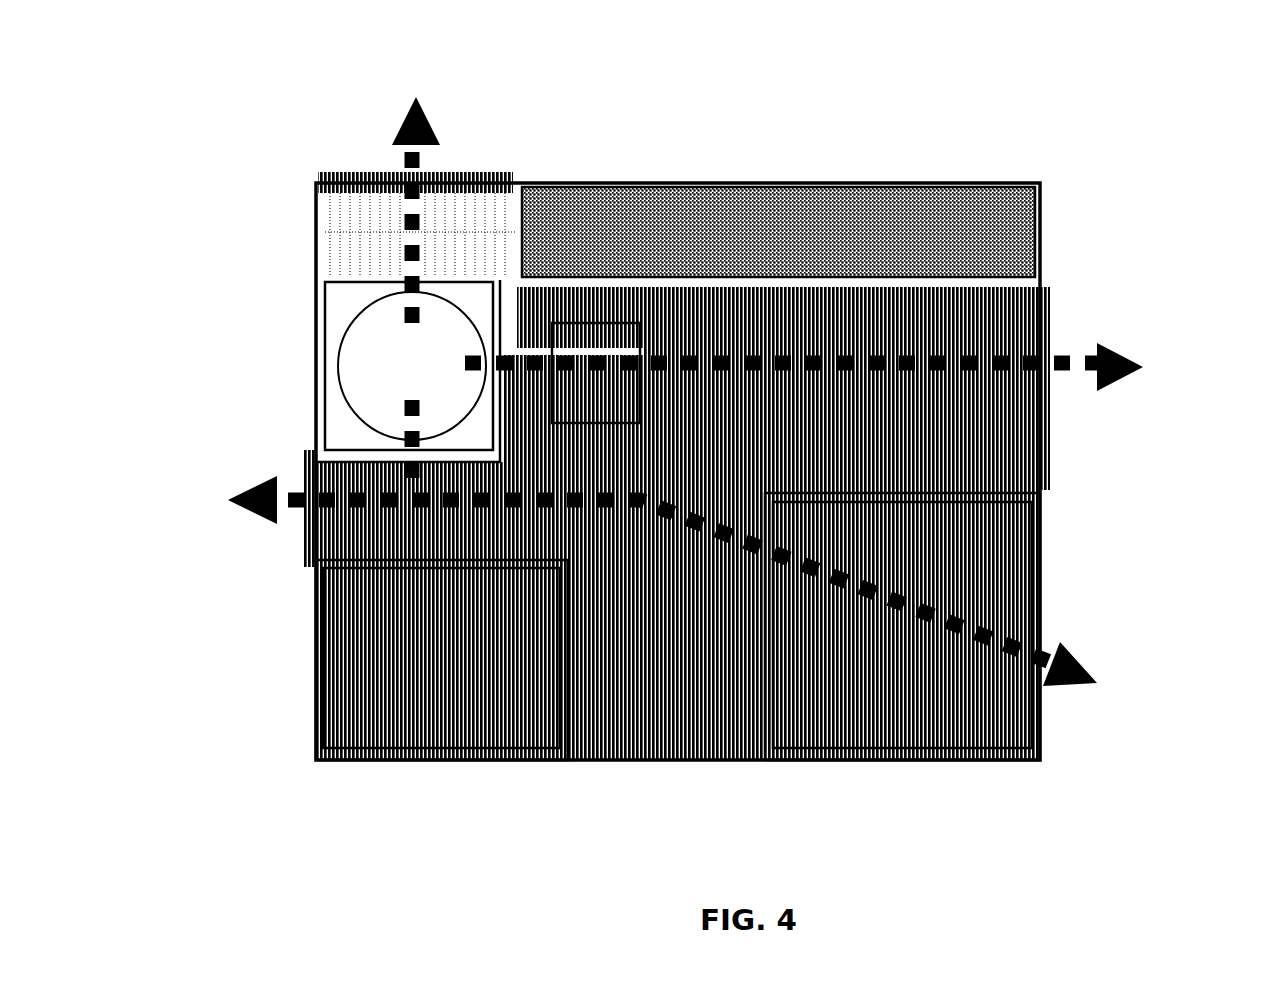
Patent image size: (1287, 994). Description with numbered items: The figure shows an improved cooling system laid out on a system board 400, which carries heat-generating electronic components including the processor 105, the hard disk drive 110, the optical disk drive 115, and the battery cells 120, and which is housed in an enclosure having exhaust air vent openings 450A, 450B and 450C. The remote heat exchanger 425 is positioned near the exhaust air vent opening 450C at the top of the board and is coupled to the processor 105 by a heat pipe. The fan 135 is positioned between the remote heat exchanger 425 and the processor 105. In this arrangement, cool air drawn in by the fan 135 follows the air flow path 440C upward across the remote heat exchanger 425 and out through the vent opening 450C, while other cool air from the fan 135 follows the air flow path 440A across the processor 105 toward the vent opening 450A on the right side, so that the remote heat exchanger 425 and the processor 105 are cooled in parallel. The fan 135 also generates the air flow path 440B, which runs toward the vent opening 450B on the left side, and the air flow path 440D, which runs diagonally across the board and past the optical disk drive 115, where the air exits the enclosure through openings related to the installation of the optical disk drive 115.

The system board 400 is at (1040, 70).
The battery cell 120 is at (778, 232).
The remote heat exchanger 425 is at (350, 265).
The exhaust air vent opening 450A is at (1068, 302).
The exhaust air vent opening 450B is at (292, 556).
The exhaust air vent opening 450C is at (470, 150).
The fan 135 is at (409, 366).
The processor 105 is at (596, 373).
The hard disk drive 110 is at (442, 660).
The optical disk drive 115 is at (902, 626).
The air flow path 440A is at (1152, 417).
The air flow path 440B is at (236, 466).
The air flow path 440C is at (380, 92).
The air flow path 440D is at (1150, 648).